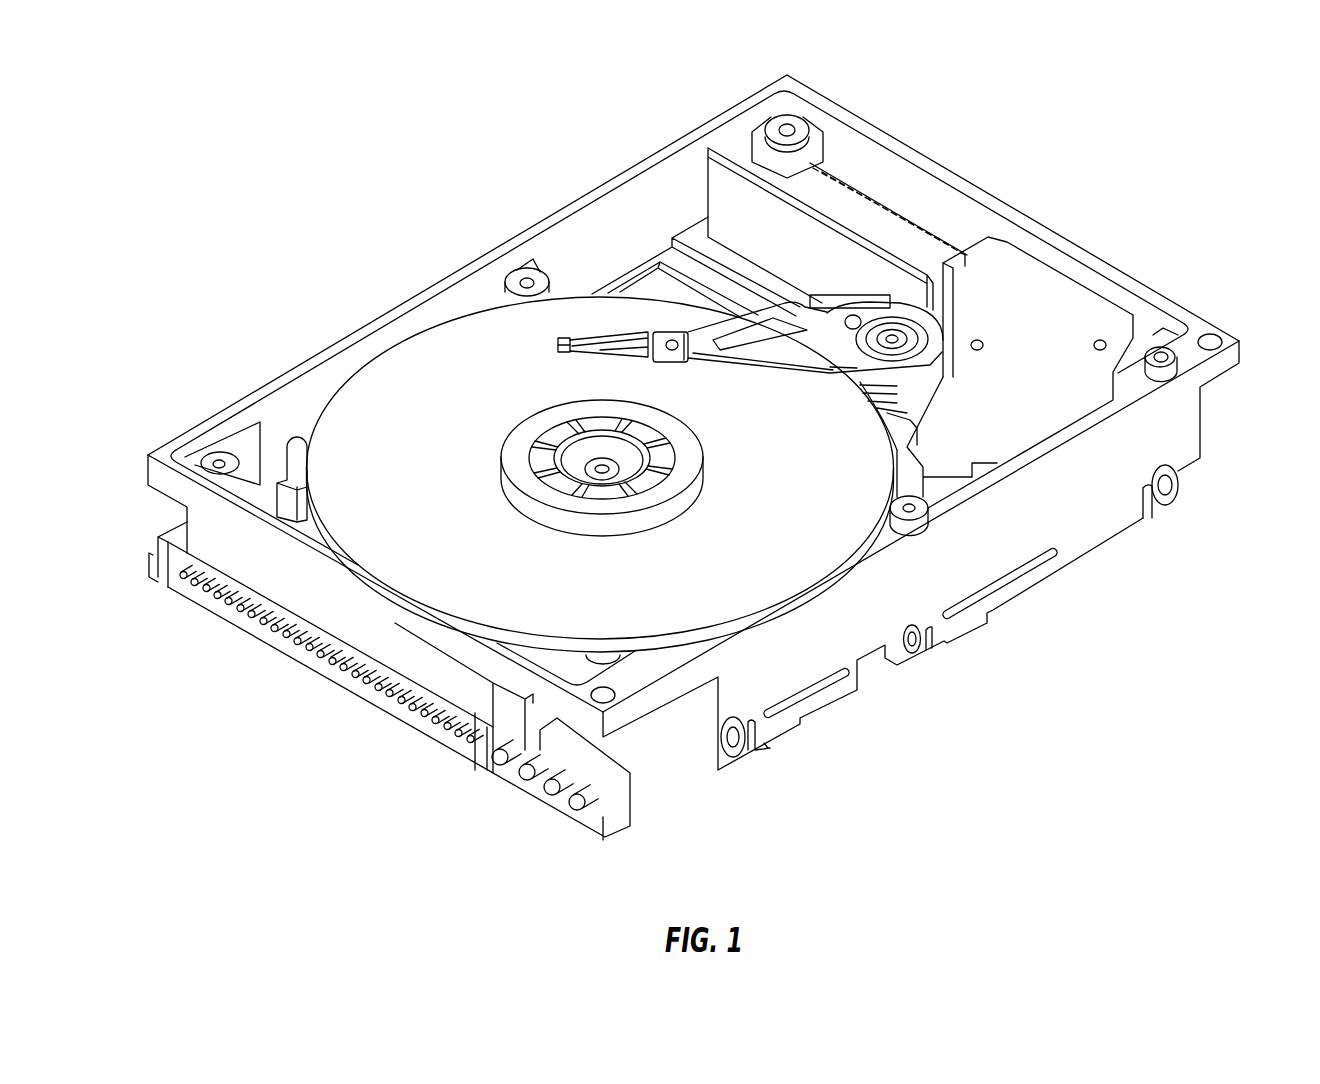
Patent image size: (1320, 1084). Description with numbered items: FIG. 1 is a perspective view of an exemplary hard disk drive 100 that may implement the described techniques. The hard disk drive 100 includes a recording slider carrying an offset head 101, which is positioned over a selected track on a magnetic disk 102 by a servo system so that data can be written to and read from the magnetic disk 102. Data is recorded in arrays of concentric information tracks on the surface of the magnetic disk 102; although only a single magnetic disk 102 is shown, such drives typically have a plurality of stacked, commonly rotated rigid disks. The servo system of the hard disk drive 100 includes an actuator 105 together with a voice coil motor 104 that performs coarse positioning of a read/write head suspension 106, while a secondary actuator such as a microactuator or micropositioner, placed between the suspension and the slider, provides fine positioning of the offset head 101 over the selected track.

The hard disk drive 100 is at (372, 147).
The offset head 101 is at (564, 338).
The magnetic disk 102 is at (398, 383).
The voice coil motor 104 is at (1043, 293).
The actuator 105 is at (747, 358).
The read/write head suspension 106 is at (618, 344).